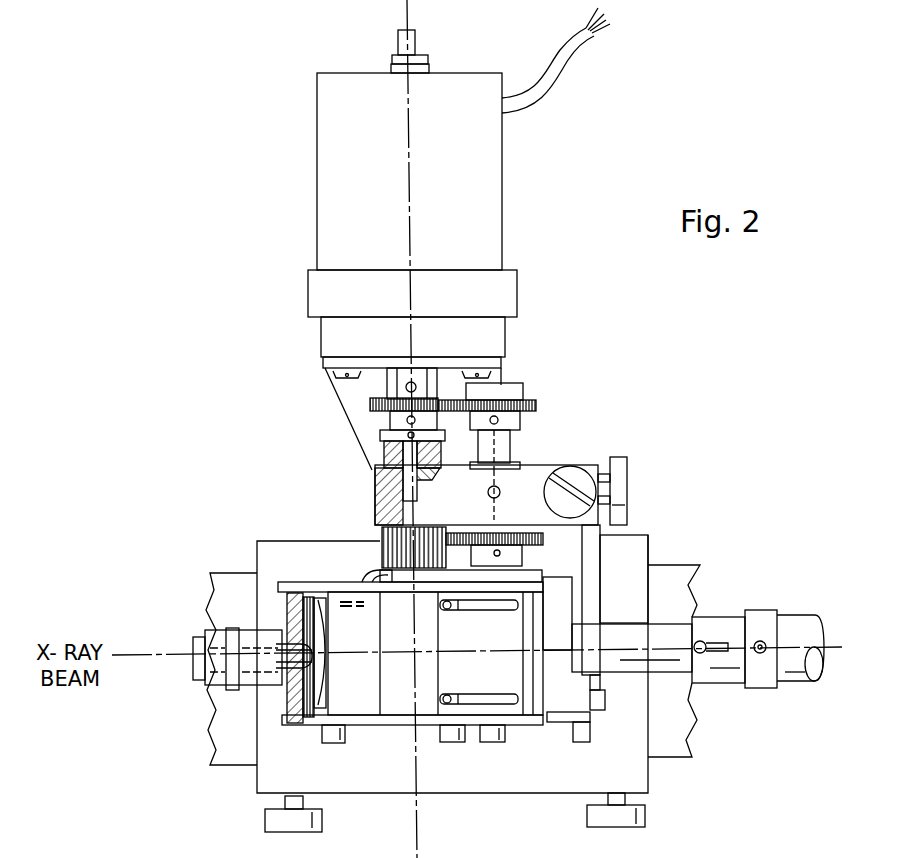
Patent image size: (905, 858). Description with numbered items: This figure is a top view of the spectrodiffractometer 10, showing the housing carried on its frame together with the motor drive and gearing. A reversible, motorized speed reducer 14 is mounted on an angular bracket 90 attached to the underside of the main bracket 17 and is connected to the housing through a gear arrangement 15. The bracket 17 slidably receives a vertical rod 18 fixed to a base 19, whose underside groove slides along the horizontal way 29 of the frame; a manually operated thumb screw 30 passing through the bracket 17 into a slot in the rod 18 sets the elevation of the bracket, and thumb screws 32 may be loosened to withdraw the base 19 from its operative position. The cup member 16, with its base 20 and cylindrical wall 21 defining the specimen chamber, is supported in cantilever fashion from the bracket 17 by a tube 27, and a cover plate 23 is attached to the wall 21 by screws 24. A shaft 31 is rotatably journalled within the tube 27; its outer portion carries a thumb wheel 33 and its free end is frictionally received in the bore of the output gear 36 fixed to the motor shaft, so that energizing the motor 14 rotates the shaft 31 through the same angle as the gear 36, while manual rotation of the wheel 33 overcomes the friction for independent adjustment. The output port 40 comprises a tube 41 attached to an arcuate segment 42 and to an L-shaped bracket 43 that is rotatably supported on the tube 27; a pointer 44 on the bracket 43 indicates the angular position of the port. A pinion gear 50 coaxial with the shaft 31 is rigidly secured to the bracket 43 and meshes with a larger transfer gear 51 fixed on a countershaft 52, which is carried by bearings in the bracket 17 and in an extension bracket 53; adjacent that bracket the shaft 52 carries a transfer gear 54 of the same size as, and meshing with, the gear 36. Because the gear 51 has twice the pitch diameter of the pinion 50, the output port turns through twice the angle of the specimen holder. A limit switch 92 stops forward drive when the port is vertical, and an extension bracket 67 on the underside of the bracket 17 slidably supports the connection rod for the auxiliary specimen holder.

The reversible, motorized speed reducer 14 is at (512, 185).
The angular bracket 90 is at (505, 362).
The extension bracket 53 is at (522, 390).
The output gear 36 is at (386, 422).
The transfer gear 54 is at (538, 406).
The gear arrangement 15 is at (543, 421).
The thumb wheel 33 is at (380, 440).
The tube 27 is at (380, 474).
The shaft 31 is at (378, 500).
The countershaft 52 is at (515, 456).
The bracket 17 is at (600, 475).
The rod 18 is at (628, 480).
The thumb screw 30 is at (627, 508).
The pinion gear 50 is at (382, 550).
The transfer gear 51 is at (540, 538).
The limit switch 92 is at (362, 578).
The L-shaped bracket 43 is at (582, 612).
The extension bracket 67 is at (592, 568).
The base 19 is at (648, 545).
The base 20 is at (297, 592).
The horizontal way 29 is at (684, 728).
The output port 40 is at (722, 604).
The cup member 16 is at (282, 612).
The spectrodiffractometer 10 is at (240, 688).
The cylindrical wall 21 is at (292, 710).
The screws 24 is at (485, 745).
The cover plate 23 is at (395, 732).
The arcuate segment 42 is at (515, 718).
The pointer 44 is at (556, 722).
The tube 41 is at (640, 680).
The thumb screws 32 is at (648, 815).